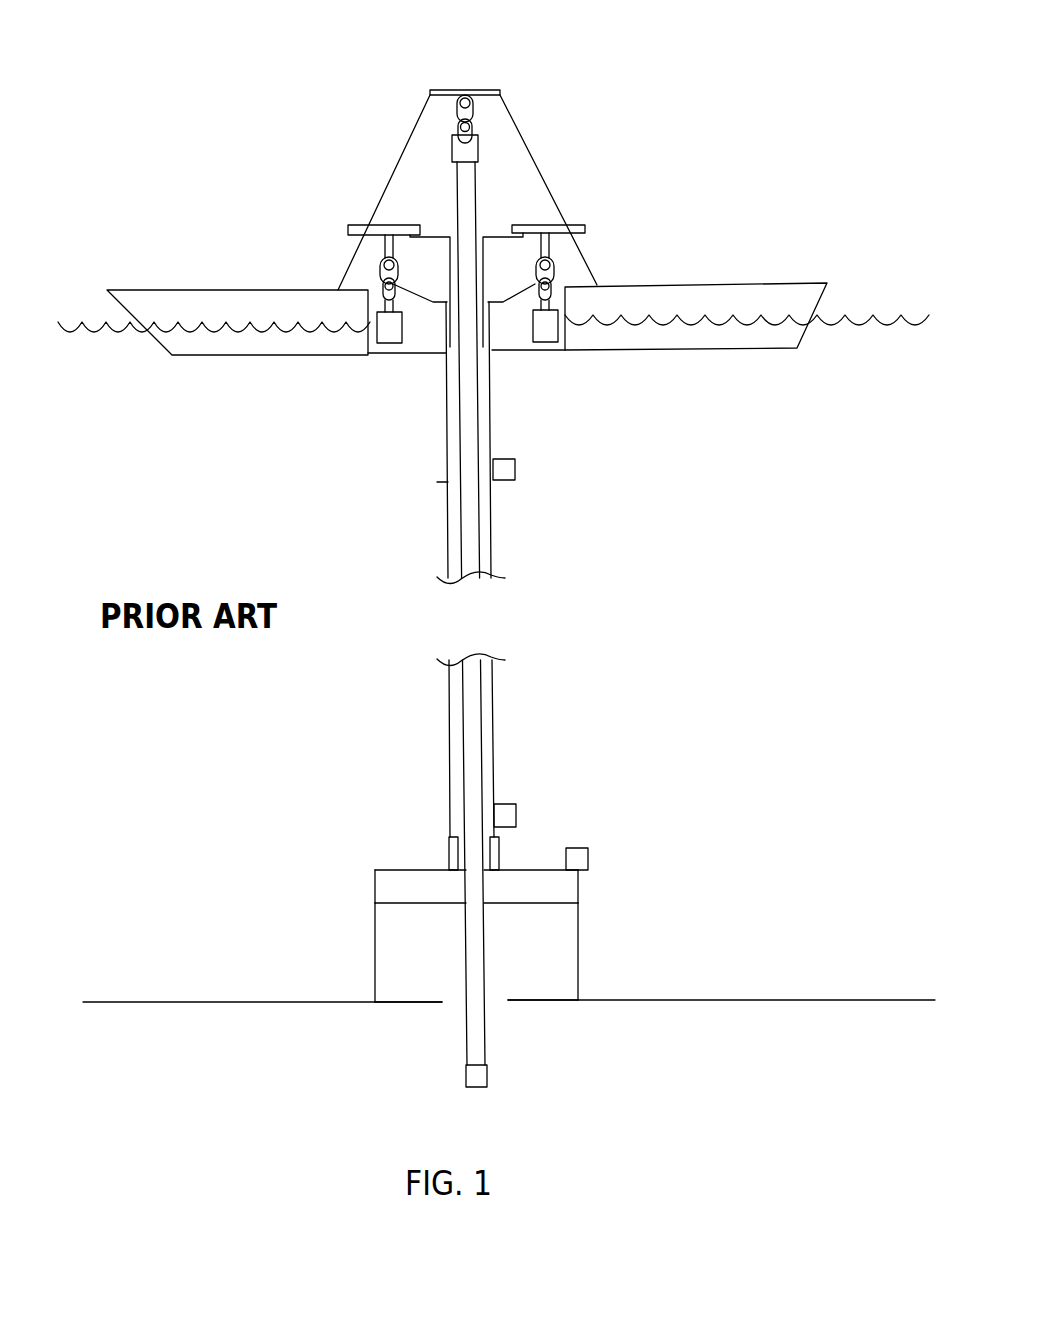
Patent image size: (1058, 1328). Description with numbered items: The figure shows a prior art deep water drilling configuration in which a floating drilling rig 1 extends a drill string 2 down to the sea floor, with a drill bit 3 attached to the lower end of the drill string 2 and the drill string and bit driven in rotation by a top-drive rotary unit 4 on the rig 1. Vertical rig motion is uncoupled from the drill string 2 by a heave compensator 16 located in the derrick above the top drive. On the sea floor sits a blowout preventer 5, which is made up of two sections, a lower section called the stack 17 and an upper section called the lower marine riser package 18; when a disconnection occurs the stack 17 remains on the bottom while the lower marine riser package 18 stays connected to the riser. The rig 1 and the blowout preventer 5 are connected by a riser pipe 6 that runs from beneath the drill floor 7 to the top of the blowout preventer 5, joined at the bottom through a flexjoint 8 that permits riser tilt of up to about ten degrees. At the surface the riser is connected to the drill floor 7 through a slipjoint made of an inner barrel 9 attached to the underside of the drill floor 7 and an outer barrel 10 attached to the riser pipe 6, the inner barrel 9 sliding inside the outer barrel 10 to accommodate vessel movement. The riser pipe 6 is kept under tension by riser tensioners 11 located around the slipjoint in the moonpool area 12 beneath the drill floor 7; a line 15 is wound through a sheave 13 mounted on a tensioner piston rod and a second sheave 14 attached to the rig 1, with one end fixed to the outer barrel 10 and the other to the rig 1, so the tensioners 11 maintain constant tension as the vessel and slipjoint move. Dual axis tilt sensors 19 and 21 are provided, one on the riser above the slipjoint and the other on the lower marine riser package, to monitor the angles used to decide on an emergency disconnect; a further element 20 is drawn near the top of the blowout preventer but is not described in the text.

The floating drilling rig 1 is at (375, 108).
The drill string 2 is at (478, 522).
The drill bit 3 is at (487, 1080).
The top-drive rotary unit 4 is at (478, 147).
The blowout preventer 5 is at (352, 903).
The riser pipe 6 is at (494, 682).
The drill floor 7 is at (362, 223).
The flexjoint 8 is at (500, 853).
The inner barrel 9 is at (485, 268).
The outer barrel 10 is at (445, 375).
The riser tensioners 11 is at (558, 327).
The moonpool area 12 is at (418, 312).
The sheave 13 is at (550, 300).
The sheave 14 is at (550, 243).
The line 15 is at (553, 272).
The heave compensator 16 is at (473, 115).
The stack 17 is at (580, 985).
The lower marine riser package 18 is at (580, 893).
The dual axis tilt sensor 19 is at (516, 813).
The valve 20 is at (590, 850).
The dual axis tilt sensor 21 is at (515, 475).